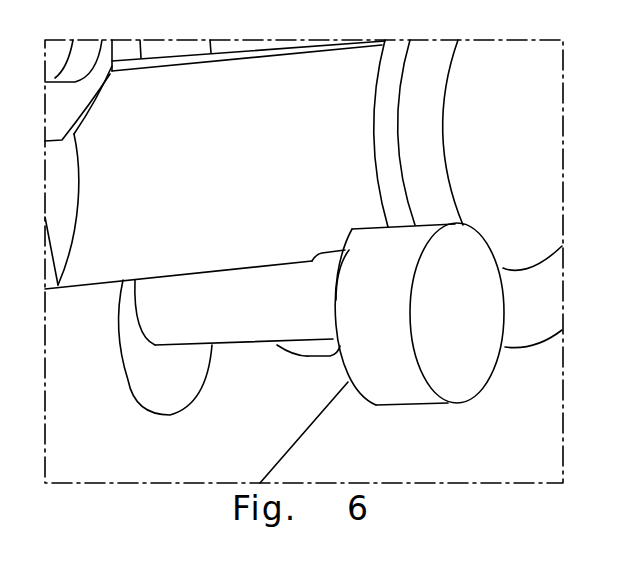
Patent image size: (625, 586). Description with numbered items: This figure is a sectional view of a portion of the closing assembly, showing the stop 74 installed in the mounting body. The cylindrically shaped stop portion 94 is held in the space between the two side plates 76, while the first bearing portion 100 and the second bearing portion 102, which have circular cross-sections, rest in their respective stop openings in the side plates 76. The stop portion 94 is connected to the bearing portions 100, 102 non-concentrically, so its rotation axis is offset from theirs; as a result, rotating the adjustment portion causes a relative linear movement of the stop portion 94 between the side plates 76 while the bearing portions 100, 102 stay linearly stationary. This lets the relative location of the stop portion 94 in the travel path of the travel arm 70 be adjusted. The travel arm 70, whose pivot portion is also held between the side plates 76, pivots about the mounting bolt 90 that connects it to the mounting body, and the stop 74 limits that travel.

The travel arm 70 is at (246, 179).
The mounting bolt 90 is at (511, 152).
The stop 74 is at (222, 347).
The stop portion 94 is at (255, 328).
The first bearing portion 100 is at (188, 391).
The second bearing portion 102 is at (400, 390).
The side plates 76 is at (120, 449).